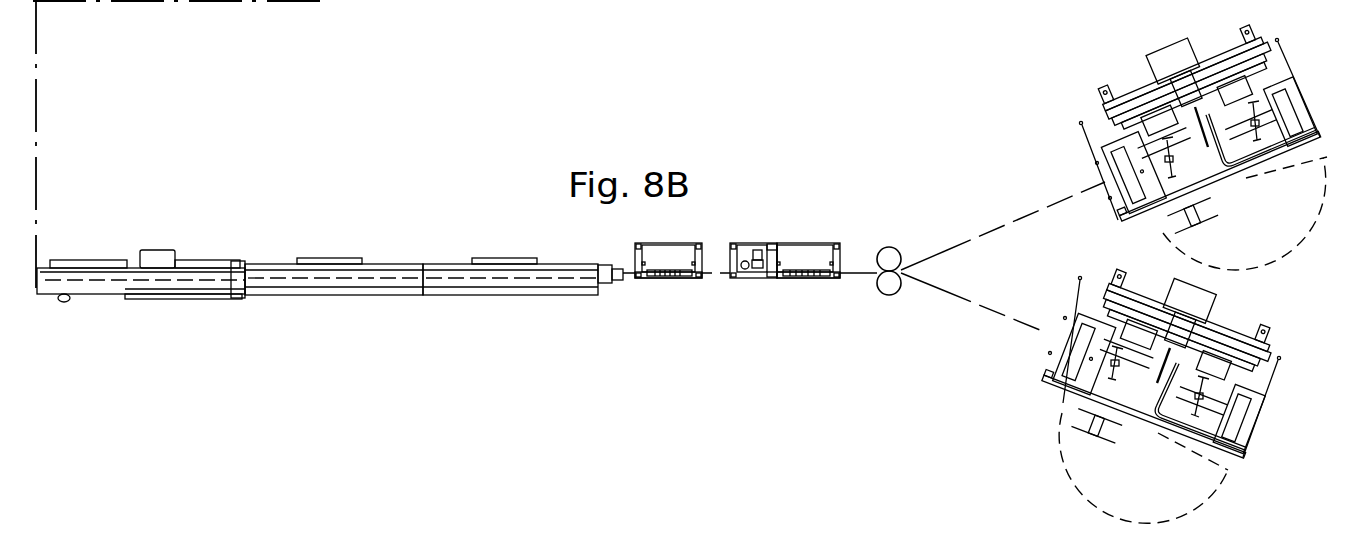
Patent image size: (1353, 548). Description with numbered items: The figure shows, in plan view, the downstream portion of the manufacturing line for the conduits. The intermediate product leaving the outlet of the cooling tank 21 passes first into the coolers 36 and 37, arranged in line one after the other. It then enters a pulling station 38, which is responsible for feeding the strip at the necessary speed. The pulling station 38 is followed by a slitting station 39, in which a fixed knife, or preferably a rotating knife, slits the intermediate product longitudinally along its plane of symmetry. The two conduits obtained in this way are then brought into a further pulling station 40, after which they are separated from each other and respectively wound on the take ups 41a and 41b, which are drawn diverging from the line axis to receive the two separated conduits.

The cooling tank 21 is at (157, 287).
The cooler 36 is at (338, 287).
The cooler 37 is at (515, 283).
The pulling station 38 is at (668, 262).
The slitting station 39 is at (758, 265).
The pulling station 40 is at (812, 262).
The take up 41a is at (1040, 378).
The take up 41b is at (1097, 135).